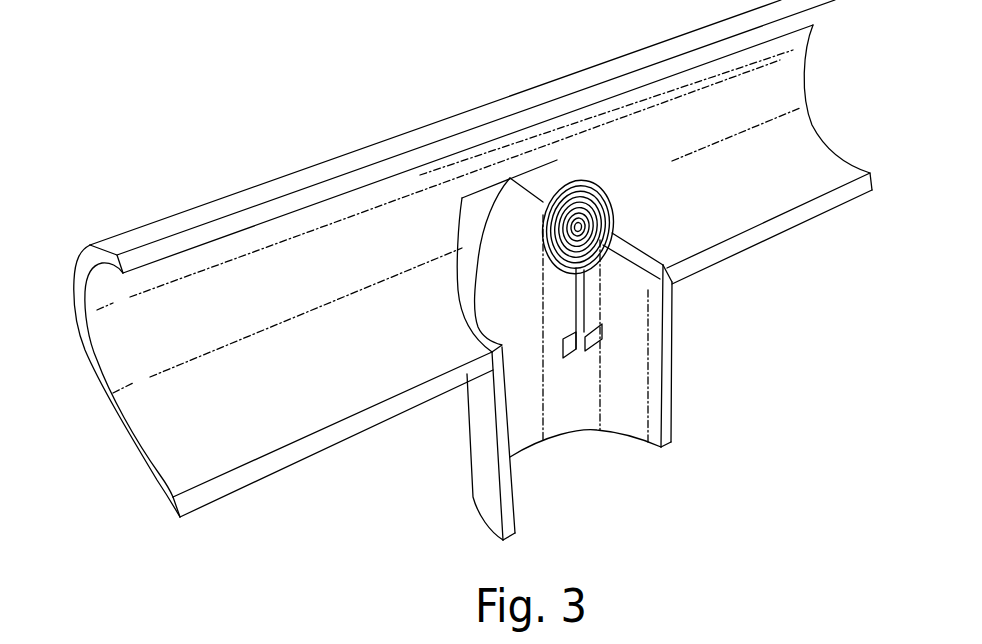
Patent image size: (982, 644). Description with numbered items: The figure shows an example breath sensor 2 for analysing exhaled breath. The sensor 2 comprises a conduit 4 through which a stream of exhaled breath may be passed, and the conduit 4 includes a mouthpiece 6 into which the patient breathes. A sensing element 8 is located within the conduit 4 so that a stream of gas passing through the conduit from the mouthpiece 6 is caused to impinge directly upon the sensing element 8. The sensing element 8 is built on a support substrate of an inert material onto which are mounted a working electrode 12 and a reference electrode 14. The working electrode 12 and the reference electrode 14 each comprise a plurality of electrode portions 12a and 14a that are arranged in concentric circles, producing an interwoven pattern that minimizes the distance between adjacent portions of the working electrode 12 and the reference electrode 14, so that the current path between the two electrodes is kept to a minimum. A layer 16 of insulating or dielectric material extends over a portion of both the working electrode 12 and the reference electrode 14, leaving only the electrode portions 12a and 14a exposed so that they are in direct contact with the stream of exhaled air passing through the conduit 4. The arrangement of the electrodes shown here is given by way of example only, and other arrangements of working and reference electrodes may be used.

The sensor 2 is at (196, 94).
The conduit 4 is at (503, 95).
The mouthpiece 6 is at (133, 410).
The sensing element 8 is at (528, 208).
The working electrode 12 is at (573, 349).
The electrode portions of the working electrode 12a is at (543, 247).
The reference electrode 14 is at (600, 332).
The electrode portions of the reference electrode 14a is at (613, 198).
The layer of insulating or dielectric material 16 is at (583, 182).